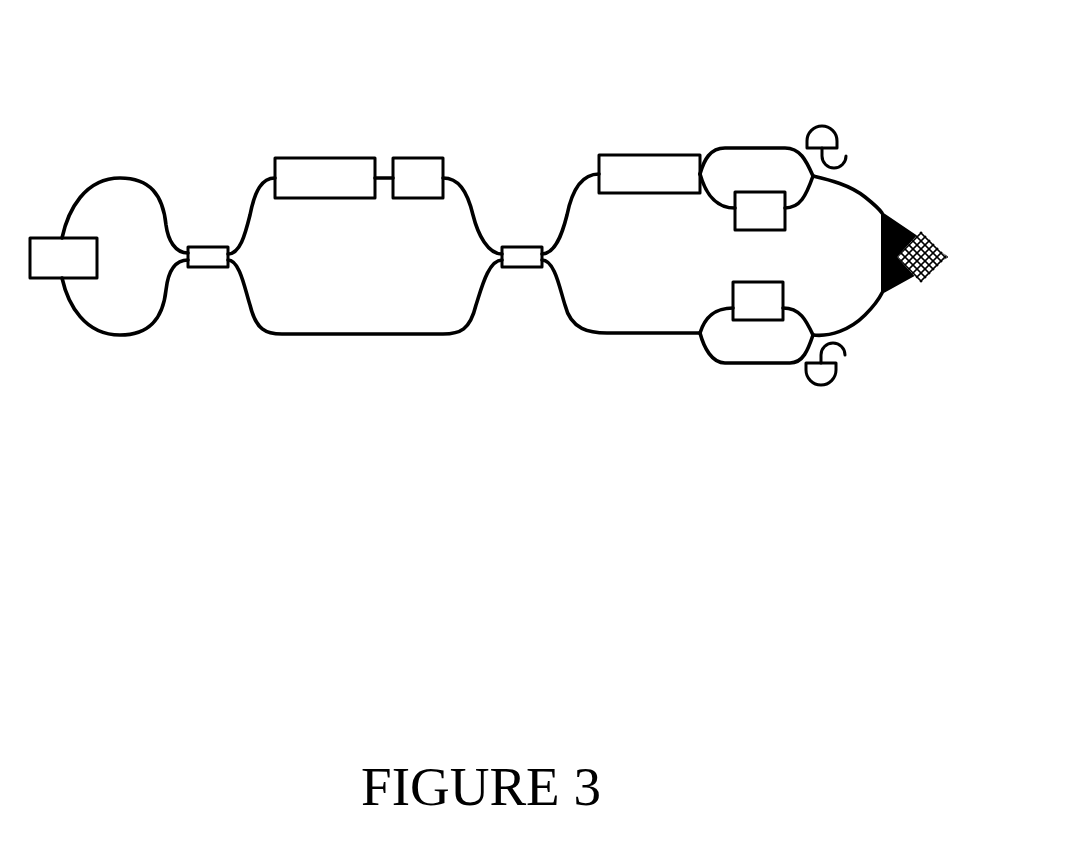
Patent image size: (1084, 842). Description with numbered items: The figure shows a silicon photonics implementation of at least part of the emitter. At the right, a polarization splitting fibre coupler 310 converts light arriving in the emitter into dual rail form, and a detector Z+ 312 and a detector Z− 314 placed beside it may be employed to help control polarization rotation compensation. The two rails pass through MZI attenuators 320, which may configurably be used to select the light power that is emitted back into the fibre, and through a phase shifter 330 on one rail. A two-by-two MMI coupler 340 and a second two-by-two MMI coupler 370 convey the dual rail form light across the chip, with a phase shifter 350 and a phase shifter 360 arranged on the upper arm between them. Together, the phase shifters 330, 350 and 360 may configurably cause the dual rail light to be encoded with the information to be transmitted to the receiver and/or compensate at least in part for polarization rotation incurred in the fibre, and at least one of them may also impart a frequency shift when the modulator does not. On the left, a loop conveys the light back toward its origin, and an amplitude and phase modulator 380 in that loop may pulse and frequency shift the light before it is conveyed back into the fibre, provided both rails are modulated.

The polarization splitting fibre coupler 310 is at (900, 217).
The detector Z+ 312 is at (822, 135).
The detector Z− 314 is at (818, 375).
The MZI attenuators 320 is at (753, 231).
The phase shifter 330 is at (649, 174).
The 2×2 MMI coupler 340 is at (520, 255).
The phase shifter 350 is at (412, 167).
The phase shifter 360 is at (325, 178).
The 2×2 MMI coupler 370 is at (212, 255).
The amplitude and phase modulator 380 is at (63, 258).